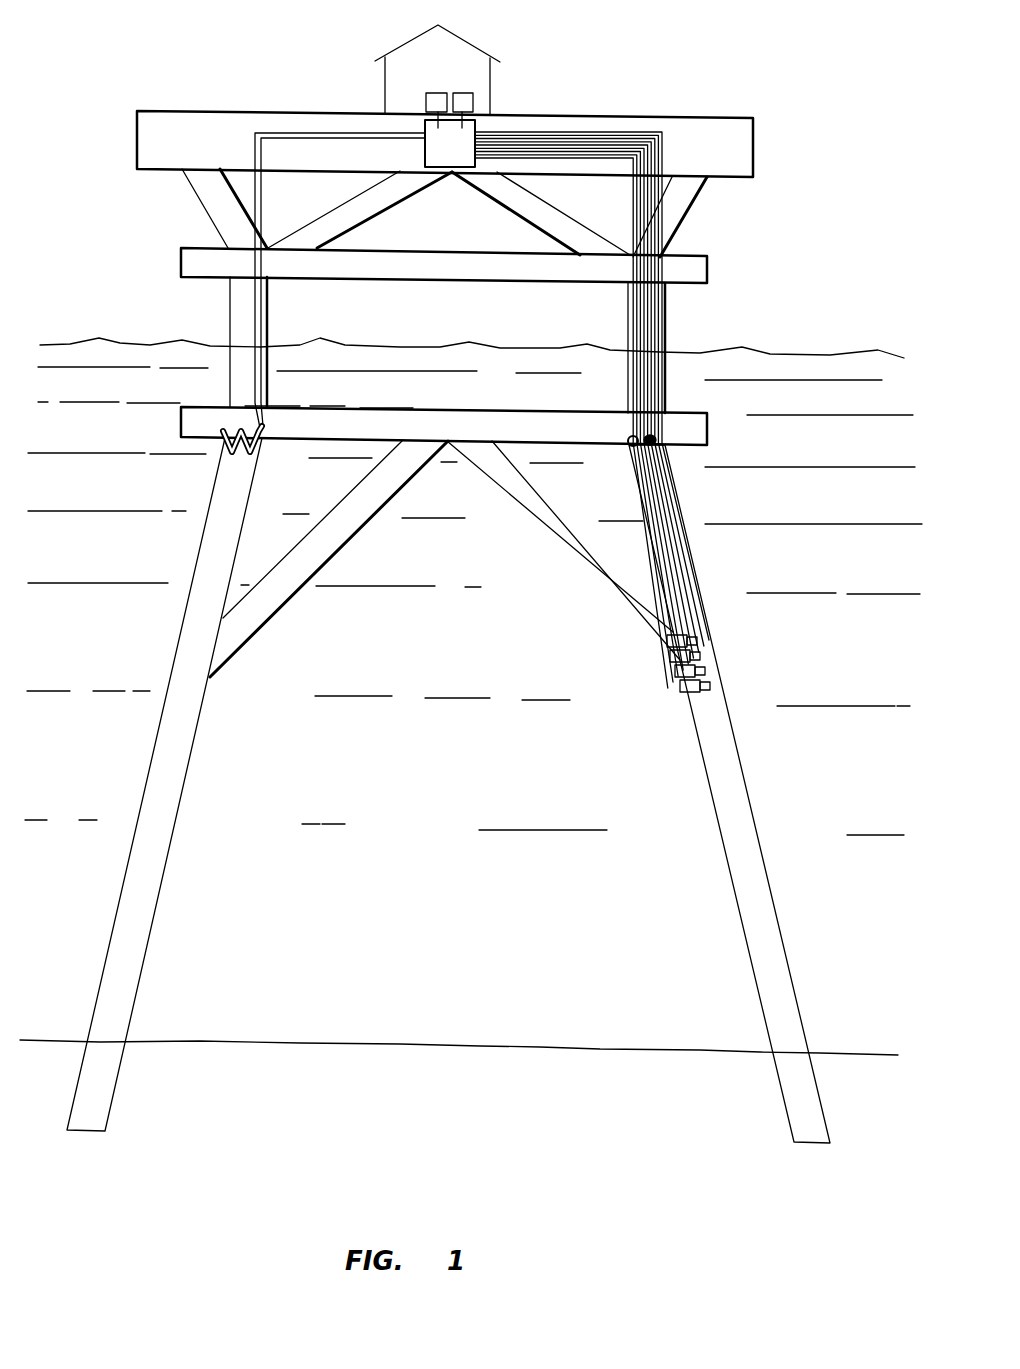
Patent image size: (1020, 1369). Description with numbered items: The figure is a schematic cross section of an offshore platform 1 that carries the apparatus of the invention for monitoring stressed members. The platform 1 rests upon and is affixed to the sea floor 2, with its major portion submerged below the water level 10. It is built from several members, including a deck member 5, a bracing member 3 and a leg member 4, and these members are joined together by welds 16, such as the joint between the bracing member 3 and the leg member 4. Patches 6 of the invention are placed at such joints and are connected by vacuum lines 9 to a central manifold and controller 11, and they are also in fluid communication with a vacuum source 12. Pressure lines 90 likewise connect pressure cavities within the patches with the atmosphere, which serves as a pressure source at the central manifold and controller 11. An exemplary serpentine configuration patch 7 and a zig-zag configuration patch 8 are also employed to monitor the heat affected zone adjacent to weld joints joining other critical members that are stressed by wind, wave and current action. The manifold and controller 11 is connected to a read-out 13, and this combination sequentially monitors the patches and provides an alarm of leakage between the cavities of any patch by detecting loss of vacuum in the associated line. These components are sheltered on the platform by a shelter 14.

The platform 1 is at (697, 255).
The sea floor 2 is at (540, 1040).
The bracing member 3 is at (550, 553).
The leg member 4 is at (707, 738).
The deck member 5 is at (745, 118).
The patches 6 is at (668, 645).
The serpentine configuration patch 7 is at (628, 447).
The zig-zag configuration patch 8 is at (262, 447).
The vacuum lines 9 is at (255, 330).
The water level 10 is at (785, 355).
The central manifold and controller 11 is at (457, 142).
The vacuum source 12 is at (463, 95).
The read-out 13 is at (440, 92).
The shelter 14 is at (440, 27).
The welds 16 is at (680, 685).
The pressure lines 90 is at (262, 215).